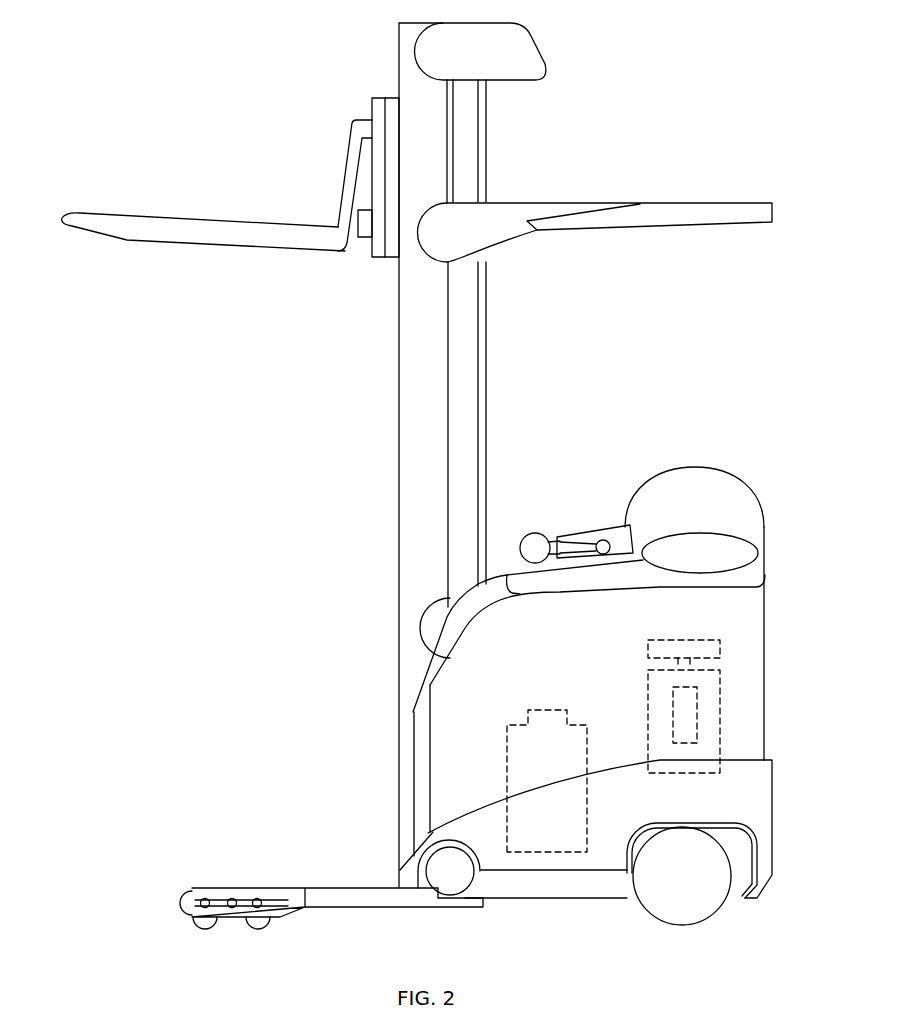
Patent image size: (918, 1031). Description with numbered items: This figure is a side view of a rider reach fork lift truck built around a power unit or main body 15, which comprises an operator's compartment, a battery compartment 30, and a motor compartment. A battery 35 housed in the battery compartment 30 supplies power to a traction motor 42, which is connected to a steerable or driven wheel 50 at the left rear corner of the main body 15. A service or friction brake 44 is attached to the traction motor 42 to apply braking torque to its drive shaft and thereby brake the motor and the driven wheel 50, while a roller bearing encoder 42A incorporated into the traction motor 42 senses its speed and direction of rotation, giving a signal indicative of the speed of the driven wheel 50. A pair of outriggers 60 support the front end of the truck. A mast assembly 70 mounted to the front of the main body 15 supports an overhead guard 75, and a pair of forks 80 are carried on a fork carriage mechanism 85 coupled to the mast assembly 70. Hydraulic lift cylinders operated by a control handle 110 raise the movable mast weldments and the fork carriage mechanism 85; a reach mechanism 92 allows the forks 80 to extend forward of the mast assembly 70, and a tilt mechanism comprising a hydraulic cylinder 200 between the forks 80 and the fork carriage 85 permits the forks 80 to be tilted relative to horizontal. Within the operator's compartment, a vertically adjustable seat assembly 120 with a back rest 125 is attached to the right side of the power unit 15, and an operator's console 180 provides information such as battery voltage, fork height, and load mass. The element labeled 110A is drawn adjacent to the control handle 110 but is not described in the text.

The power unit or main body 15 is at (781, 760).
The battery compartment 30 is at (527, 687).
The battery 35 is at (507, 768).
The traction motor 42 is at (645, 704).
The roller bearing encoder 42A is at (697, 726).
The service or friction brake 44 is at (645, 652).
The steerable wheel 50 is at (706, 893).
The outriggers 60 is at (241, 887).
The mast assembly 70 is at (408, 526).
The overhead guard 75 is at (680, 202).
The forks 80 is at (167, 214).
The fork carriage mechanism 85 is at (378, 96).
The reach mechanism 92 is at (372, 110).
The control handle 110 is at (576, 542).
The control element 110A is at (583, 540).
The seat assembly 120 is at (765, 487).
The back rest 125 is at (688, 471).
The operator's console 180 is at (740, 557).
The hydraulic cylinder 200 is at (363, 240).